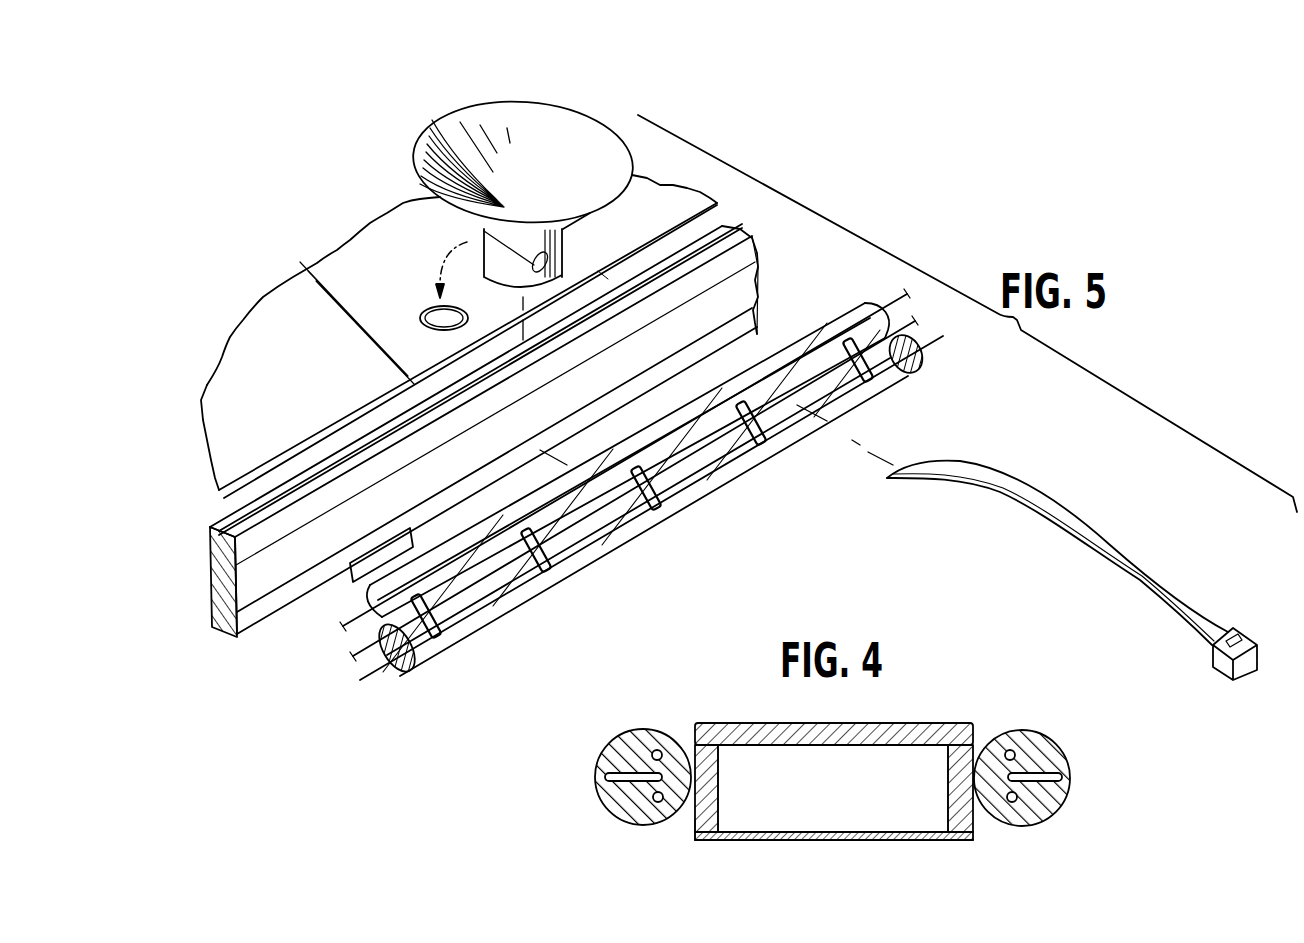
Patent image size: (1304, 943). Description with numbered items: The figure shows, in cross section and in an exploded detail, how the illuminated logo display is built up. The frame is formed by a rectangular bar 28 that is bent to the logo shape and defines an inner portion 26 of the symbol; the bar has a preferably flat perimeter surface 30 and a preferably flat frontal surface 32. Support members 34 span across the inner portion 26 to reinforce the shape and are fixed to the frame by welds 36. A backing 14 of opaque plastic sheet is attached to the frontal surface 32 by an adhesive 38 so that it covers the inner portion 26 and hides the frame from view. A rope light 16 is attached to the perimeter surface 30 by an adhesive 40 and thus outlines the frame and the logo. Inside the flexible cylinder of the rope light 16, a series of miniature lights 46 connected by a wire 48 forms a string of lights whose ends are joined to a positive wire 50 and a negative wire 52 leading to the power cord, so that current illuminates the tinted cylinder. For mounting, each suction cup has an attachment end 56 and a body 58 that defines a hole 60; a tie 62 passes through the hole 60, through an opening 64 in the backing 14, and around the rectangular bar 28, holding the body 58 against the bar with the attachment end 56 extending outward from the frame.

In FIG. 5, the backing 14 is at (273, 411).
In FIG. 4, the backing 14 is at (838, 840).
In FIG. 5, the rope light 16 is at (875, 297).
In FIG. 4, the rope light 16 is at (1057, 750).
In FIG. 4, the inner portion 26 is at (880, 812).
In FIG. 5, the rectangular bar 28 is at (222, 618).
In FIG. 5, the perimeter surface 30 is at (748, 326).
In FIG. 4, the perimeter surface 30 is at (690, 820).
In FIG. 5, the frontal surface 32 is at (700, 240).
In FIG. 4, the support members 34 is at (900, 728).
In FIG. 4, the welds 36 is at (733, 762).
In FIG. 5, the adhesive 38 is at (722, 228).
In FIG. 4, the adhesive 38 is at (695, 837).
In FIG. 5, the adhesive 40 is at (757, 320).
In FIG. 4, the adhesive 40 is at (978, 750).
In FIG. 5, the miniature lights 46 is at (640, 505).
In FIG. 4, the miniature lights 46 is at (1060, 773).
In FIG. 5, the wire 48 is at (364, 679).
In FIG. 5, the positive wire 50 is at (343, 630).
In FIG. 4, the positive wire 50 is at (1012, 748).
In FIG. 5, the negative wire 52 is at (353, 660).
In FIG. 4, the negative wire 52 is at (1057, 803).
In FIG. 5, the attachment end 56 is at (455, 106).
In FIG. 5, the body 58 is at (603, 275).
In FIG. 5, the hole 60 is at (484, 229).
In FIG. 5, the ties 62 is at (1177, 603).
In FIG. 5, the opening 64 is at (421, 317).